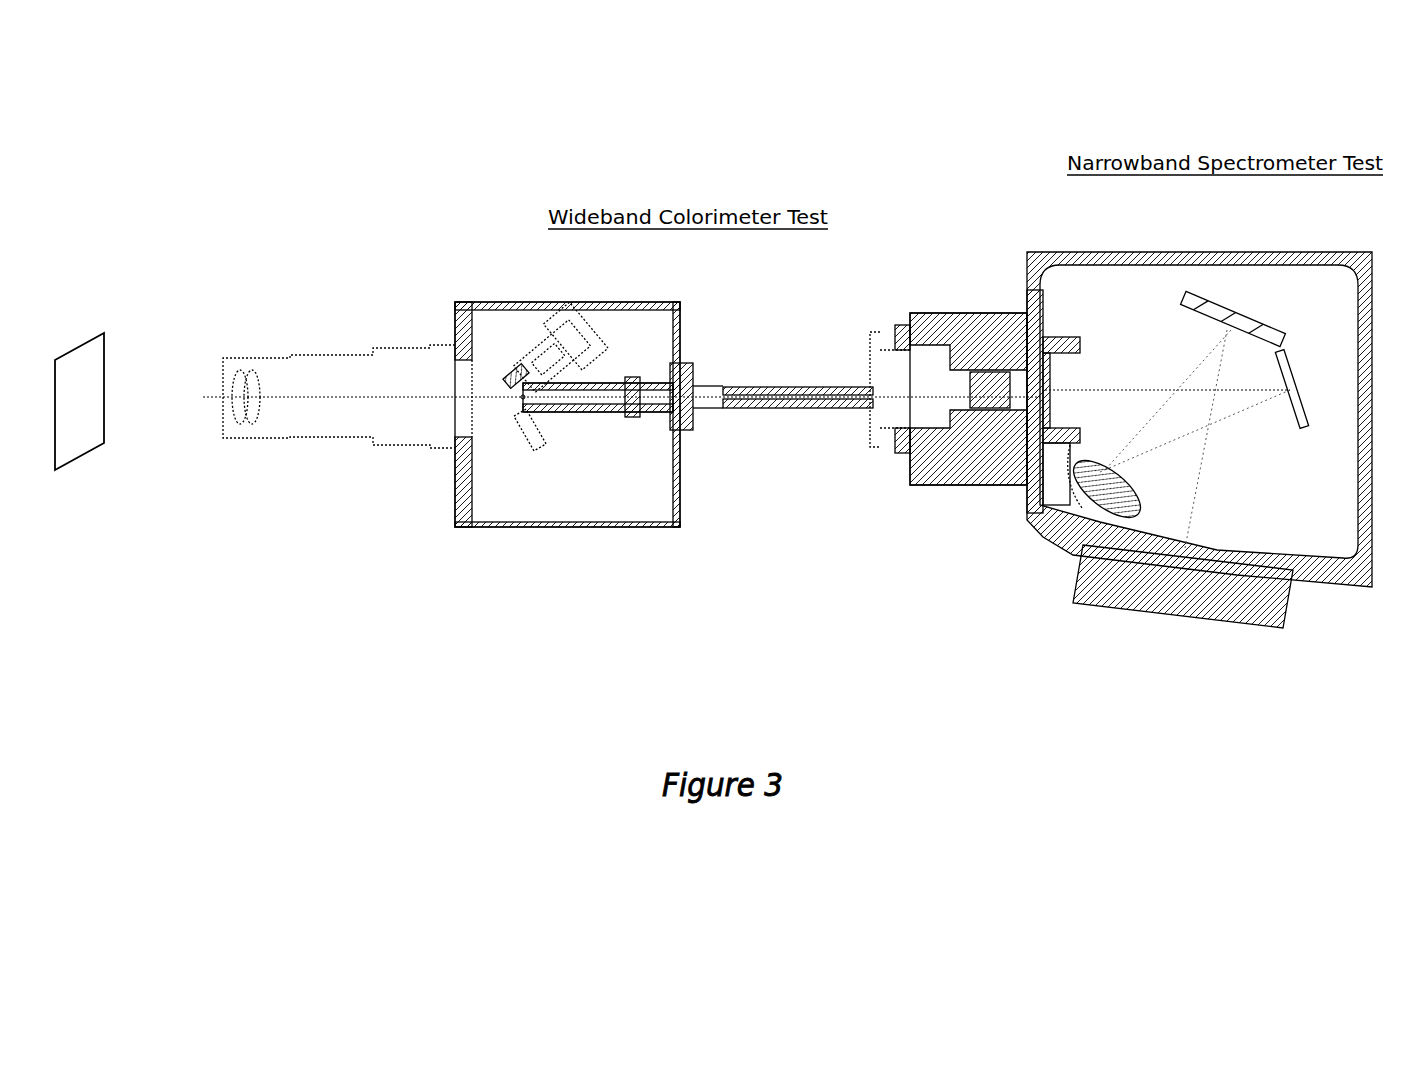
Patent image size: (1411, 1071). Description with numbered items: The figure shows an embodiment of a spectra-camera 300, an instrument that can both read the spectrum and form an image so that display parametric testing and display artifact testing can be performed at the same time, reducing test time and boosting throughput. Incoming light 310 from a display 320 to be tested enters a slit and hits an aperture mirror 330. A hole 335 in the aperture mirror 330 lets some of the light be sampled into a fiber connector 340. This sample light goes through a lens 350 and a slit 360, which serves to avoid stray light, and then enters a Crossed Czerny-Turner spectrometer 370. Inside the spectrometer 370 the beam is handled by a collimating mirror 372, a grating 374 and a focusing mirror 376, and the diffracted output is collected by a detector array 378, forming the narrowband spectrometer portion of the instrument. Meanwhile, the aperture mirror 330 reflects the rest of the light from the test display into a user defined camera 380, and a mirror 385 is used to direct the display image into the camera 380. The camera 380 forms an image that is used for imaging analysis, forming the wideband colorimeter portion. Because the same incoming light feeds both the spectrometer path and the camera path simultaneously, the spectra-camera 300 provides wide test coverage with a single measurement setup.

The spectra-camera 300 is at (183, 88).
The incoming light 310 is at (186, 395).
The display 320 is at (81, 368).
The aperture mirror 330 is at (524, 450).
The hole 335 is at (521, 399).
The fiber connector 340 is at (713, 390).
The lens 350 is at (957, 483).
The slit 360 is at (1027, 323).
The Crossed Czerny-Turner spectrometer 370 is at (1239, 511).
The collimating mirror 372 is at (1290, 340).
The grating 374 is at (1062, 508).
The focusing mirror 376 is at (1186, 293).
The detector array 378 is at (1080, 552).
The user defined camera 380 is at (537, 363).
The mirror 385 is at (504, 380).